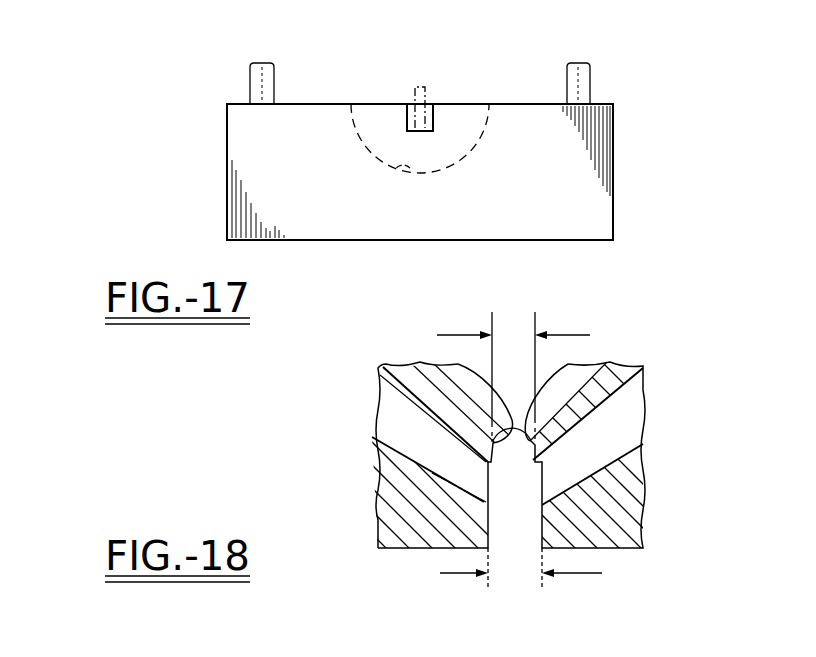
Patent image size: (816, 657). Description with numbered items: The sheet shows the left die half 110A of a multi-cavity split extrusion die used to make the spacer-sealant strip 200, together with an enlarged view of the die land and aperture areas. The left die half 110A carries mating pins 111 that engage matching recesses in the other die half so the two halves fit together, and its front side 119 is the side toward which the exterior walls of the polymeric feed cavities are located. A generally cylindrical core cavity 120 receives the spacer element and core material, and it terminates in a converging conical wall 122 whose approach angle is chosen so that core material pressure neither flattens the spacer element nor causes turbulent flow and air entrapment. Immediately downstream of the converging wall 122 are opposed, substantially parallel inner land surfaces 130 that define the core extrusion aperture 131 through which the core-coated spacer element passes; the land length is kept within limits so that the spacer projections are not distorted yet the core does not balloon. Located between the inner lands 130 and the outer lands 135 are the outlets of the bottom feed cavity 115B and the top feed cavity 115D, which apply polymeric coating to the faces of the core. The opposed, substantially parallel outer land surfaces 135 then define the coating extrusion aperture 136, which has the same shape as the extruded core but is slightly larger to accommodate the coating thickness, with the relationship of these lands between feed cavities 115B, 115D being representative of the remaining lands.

In FIG. 17, the left die half 110A is at (216, 153).
In FIG. 17, the mating pins 111 is at (256, 62).
In FIG. 17, the front side 119 is at (583, 181).
In FIG. 17, the core cavity 120 is at (418, 172).
In FIG. 17, the outer land surfaces 135 is at (410, 104).
In FIG. 18, the outer land surfaces 135 is at (480, 528).
In FIG. 17, the spacer-sealant strip 200 is at (424, 86).
In FIG. 18, the bottom feed cavity 115B is at (393, 418).
In FIG. 18, the top feed cavity 115D is at (603, 437).
In FIG. 18, the converging conical wall 122 is at (463, 402).
In FIG. 18, the inner land surfaces 130 is at (463, 363).
In FIG. 18, the core extrusion aperture 131 is at (508, 332).
In FIG. 18, the coating extrusion aperture 136 is at (523, 574).